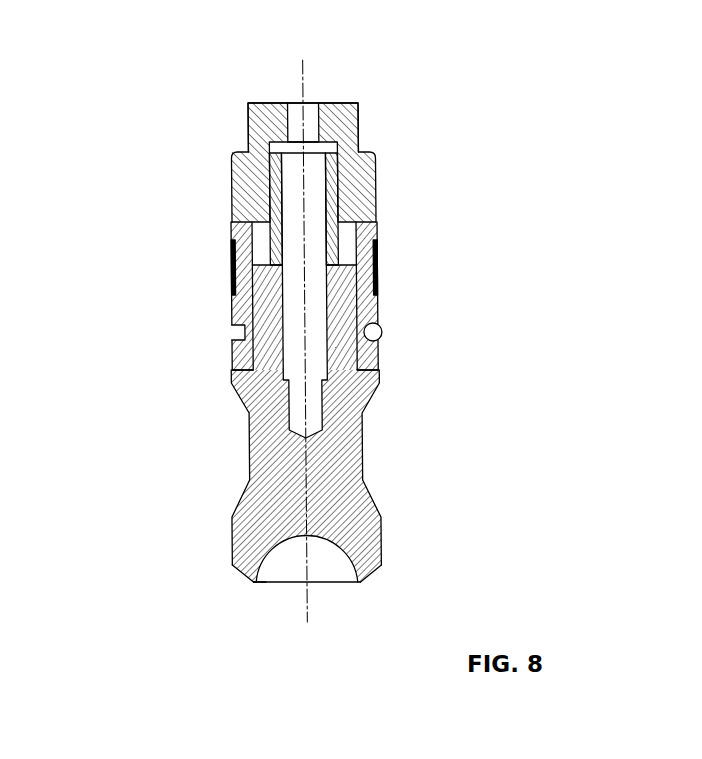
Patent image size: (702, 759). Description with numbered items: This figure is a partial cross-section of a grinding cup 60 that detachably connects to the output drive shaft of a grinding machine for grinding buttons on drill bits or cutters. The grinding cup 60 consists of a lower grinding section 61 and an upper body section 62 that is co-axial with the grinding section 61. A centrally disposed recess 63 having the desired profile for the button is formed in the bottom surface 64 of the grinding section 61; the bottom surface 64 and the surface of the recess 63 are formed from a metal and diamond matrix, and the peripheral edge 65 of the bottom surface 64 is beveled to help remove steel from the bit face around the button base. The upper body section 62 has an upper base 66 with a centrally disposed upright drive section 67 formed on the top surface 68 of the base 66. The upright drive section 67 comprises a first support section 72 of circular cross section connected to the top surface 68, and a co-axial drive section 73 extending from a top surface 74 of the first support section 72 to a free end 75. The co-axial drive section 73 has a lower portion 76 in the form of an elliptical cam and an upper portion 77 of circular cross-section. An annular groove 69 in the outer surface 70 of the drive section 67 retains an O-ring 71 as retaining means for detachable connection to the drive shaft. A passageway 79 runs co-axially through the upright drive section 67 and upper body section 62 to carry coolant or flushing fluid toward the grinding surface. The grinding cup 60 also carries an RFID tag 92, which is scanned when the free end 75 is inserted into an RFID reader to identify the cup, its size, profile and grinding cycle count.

The grinding cup 60 is at (305, 335).
The lower grinding section 61 is at (384, 536).
The upper body section 62 is at (384, 450).
The centrally disposed recess 63 is at (345, 571).
The bottom surface 64 is at (270, 583).
The peripheral edge 65 is at (372, 572).
The upper base 66 is at (232, 386).
The upright drive section 67 is at (305, 273).
The top surface 68 is at (232, 356).
The annular groove 69 is at (240, 332).
The outer surface 70 is at (230, 313).
The O-ring 71 is at (379, 341).
The first support section 72 is at (305, 298).
The co-axial drive section 73 is at (270, 143).
The top surface 74 is at (243, 203).
The free end 75 is at (338, 103).
The lower portion 76 is at (232, 187).
The upper portion 77 is at (262, 118).
The passageway 79 is at (313, 368).
The RFID tag 92 is at (533, 268).